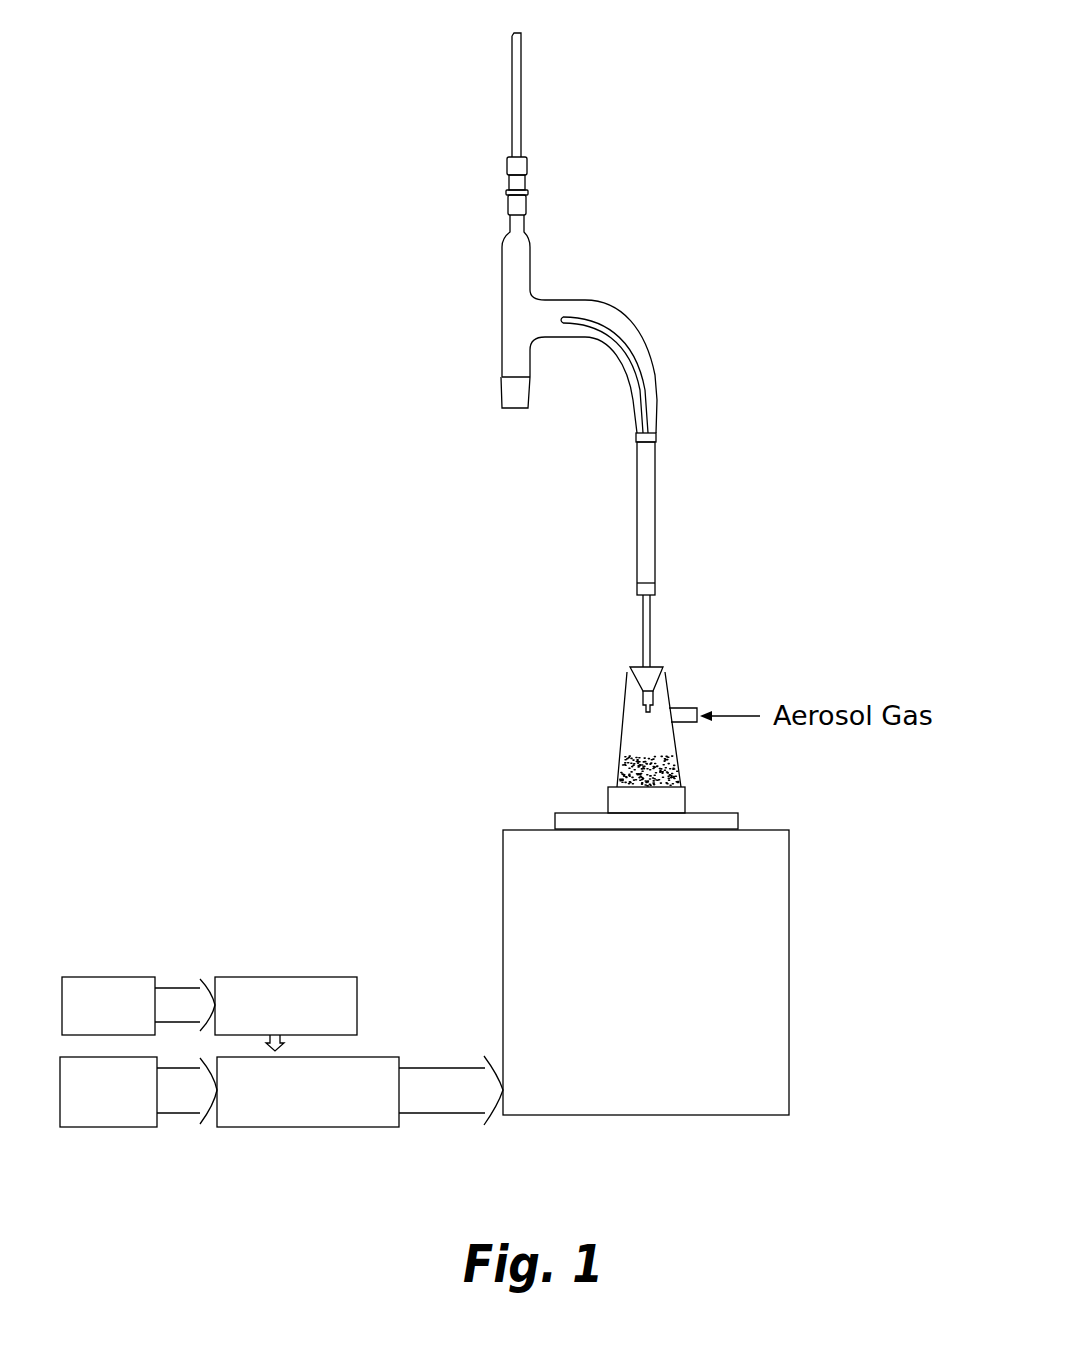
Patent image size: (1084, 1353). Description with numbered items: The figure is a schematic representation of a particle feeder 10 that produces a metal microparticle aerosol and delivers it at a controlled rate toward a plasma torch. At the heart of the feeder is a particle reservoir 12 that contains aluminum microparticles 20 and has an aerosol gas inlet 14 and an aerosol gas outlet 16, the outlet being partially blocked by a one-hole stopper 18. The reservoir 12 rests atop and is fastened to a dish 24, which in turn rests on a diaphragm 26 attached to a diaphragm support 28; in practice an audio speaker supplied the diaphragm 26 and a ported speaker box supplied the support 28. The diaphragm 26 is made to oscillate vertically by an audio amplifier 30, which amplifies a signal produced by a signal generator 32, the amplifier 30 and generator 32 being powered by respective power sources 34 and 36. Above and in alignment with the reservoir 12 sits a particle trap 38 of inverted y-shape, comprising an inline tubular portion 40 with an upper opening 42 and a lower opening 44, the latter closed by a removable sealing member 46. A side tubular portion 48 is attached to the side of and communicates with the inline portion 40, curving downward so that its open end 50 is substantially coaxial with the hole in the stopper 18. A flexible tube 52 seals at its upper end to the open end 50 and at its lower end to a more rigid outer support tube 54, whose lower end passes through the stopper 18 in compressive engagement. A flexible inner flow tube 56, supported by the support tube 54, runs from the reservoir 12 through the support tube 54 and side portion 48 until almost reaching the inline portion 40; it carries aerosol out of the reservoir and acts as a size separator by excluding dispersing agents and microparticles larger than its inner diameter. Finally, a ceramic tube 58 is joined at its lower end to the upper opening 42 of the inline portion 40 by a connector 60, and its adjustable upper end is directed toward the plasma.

The particle feeder 10 is at (255, 348).
The particle reservoir 12 is at (618, 745).
The aerosol gas inlet 14 is at (686, 708).
The aerosol gas outlet 16 is at (630, 672).
The one-hole stopper 18 is at (656, 666).
The aluminum microparticles 20 is at (677, 760).
The dish 24 is at (680, 800).
The diaphragm 26 is at (556, 822).
The diaphragm support 28 is at (503, 873).
The audio amplifier 30 is at (330, 1091).
The signal generator 32 is at (256, 1014).
The power source 34 is at (90, 1128).
The power source 36 is at (93, 977).
The particle trap 38 is at (557, 300).
The inline tubular portion 40 is at (502, 300).
The upper opening 42 is at (527, 228).
The lower opening 44 is at (502, 338).
The removable sealing member 46 is at (514, 410).
The side tubular portion 48 is at (653, 348).
The open end 50 is at (657, 436).
The flexible tube 52 is at (657, 518).
The outer support tube 54 is at (642, 645).
The inner flow tube 56 is at (628, 322).
The ceramic tube 58 is at (521, 92).
The connector 60 is at (507, 204).